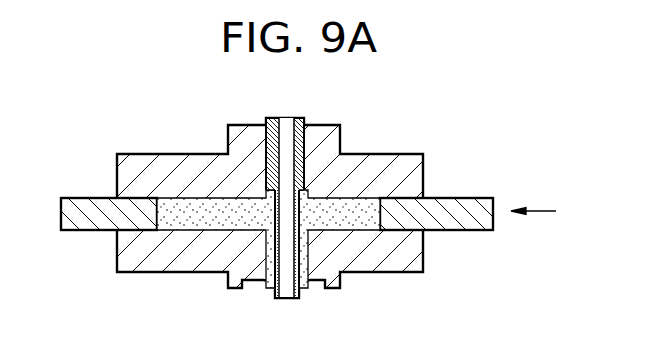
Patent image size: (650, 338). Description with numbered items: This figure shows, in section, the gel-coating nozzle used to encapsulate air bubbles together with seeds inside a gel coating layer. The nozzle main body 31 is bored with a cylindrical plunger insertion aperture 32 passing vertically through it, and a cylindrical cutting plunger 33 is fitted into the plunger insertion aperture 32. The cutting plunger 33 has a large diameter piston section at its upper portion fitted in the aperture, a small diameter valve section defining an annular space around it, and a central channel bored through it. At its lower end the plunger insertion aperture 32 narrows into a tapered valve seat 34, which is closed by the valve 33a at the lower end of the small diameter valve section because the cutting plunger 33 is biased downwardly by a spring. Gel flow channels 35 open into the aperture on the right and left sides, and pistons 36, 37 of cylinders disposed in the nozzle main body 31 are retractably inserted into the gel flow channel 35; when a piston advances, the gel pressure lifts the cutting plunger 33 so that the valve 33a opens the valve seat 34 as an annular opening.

The nozzle main body 31 is at (387, 160).
The plunger insertion aperture 32 is at (305, 200).
The cutting plunger 33 is at (254, 205).
The valve 33a is at (273, 287).
The valve seat 34 is at (290, 298).
The gel flow channel 35 is at (362, 220).
The piston 36 is at (463, 200).
The piston 37 is at (83, 205).